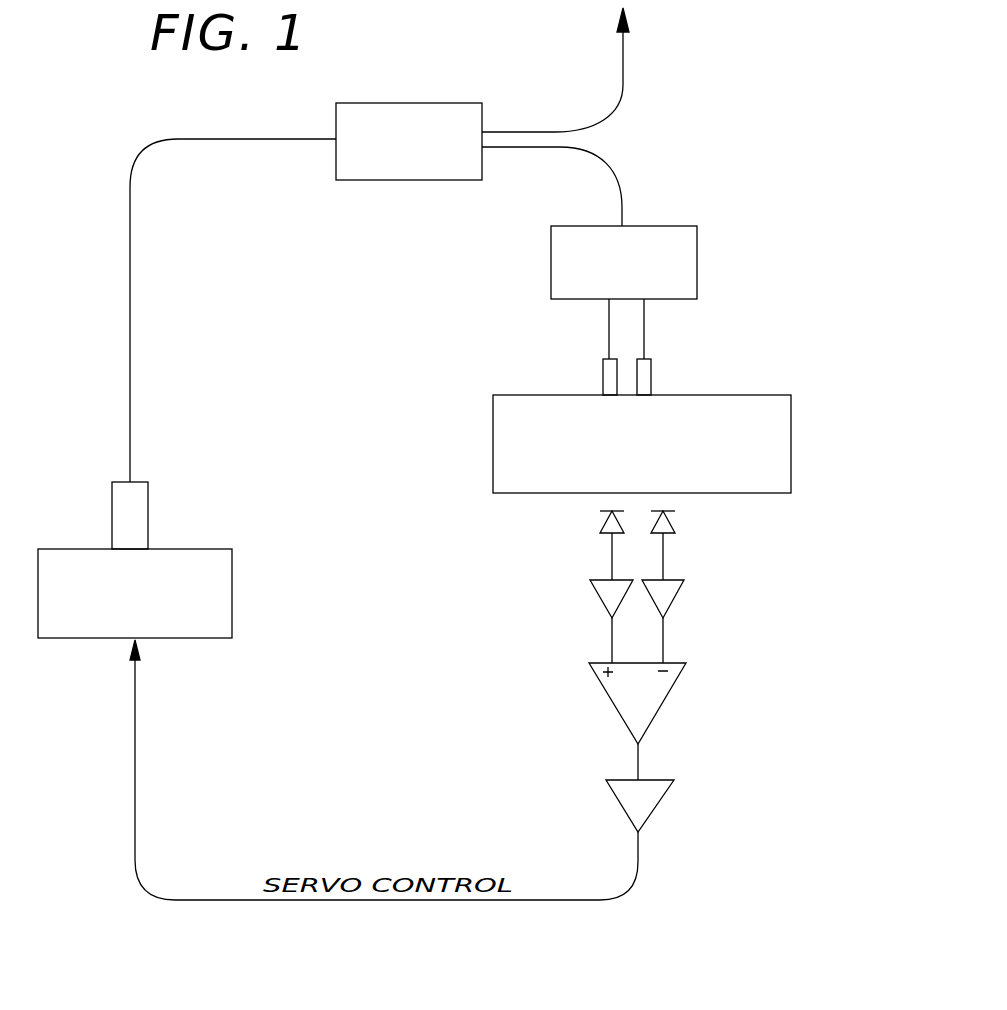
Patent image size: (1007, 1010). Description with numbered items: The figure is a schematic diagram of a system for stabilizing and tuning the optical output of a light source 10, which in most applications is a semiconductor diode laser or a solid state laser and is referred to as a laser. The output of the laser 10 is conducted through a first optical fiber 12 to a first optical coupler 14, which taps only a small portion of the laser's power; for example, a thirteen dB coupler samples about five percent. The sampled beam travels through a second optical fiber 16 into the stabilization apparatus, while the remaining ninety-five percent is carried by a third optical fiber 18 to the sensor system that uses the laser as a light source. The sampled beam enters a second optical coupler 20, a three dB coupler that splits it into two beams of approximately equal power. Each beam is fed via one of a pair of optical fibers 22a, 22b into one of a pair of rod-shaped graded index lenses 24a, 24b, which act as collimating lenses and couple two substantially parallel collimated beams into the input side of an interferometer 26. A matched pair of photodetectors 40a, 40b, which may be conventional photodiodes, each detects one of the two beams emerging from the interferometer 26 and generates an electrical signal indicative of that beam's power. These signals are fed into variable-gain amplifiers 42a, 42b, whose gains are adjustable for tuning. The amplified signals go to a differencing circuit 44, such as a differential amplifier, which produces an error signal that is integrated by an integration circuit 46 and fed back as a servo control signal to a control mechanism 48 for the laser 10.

The light source 10 is at (148, 507).
The first optical fiber 12 is at (130, 249).
The first optical coupler 14 is at (443, 103).
The second optical fiber 16 is at (622, 194).
The third optical fiber 18 is at (623, 50).
The second optical coupler 20 is at (697, 265).
The optical fiber 22a is at (609, 323).
The optical fiber 22b is at (644, 318).
The graded index lens 24a is at (603, 376).
The graded index lens 24b is at (652, 381).
The interferometer 26 is at (791, 417).
The photodetector 40a is at (600, 524).
The photodetector 40b is at (675, 523).
The amplifier 42a is at (600, 600).
The amplifier 42b is at (675, 598).
The differencing circuit 44 is at (666, 700).
The integration circuit 46 is at (657, 806).
The control mechanism 48 is at (232, 597).